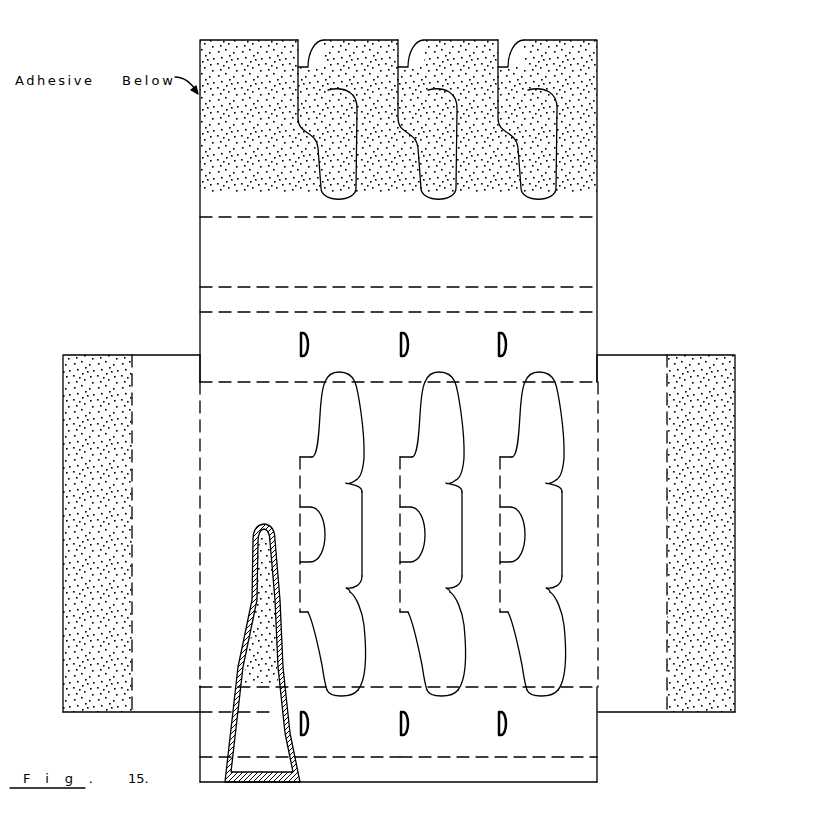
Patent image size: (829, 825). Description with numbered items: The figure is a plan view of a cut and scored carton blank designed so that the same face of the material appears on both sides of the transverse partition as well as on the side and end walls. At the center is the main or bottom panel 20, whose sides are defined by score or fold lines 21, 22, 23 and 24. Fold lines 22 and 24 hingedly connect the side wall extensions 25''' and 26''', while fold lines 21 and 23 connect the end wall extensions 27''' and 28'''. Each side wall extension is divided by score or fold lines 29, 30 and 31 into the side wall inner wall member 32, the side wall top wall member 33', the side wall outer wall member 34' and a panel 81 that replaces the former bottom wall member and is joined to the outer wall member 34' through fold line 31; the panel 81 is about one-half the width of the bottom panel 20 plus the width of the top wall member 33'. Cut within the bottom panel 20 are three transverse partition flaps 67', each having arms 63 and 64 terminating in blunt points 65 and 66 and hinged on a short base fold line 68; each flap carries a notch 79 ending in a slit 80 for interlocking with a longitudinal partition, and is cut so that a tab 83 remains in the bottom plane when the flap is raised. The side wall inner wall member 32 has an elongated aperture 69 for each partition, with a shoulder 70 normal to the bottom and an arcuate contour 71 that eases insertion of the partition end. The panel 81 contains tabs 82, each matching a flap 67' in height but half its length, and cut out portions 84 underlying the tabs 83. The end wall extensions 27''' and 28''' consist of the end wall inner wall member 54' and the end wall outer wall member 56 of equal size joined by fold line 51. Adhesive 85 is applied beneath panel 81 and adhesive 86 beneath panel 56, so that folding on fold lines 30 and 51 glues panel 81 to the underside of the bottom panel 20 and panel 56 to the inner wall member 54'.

The main or bottom panel 20 is at (498, 430).
The score or fold line 21 is at (200, 510).
The score or fold line 22 is at (269, 382).
The score or fold line 23 is at (598, 453).
The score or fold line 24 is at (462, 688).
The side wall extension 25''' is at (427, 116).
The side wall extension 26''' is at (435, 769).
The end wall extension 27''' is at (131, 510).
The end wall extension 28''' is at (669, 507).
The score or fold line 29 is at (440, 314).
The score or fold line 30 is at (460, 288).
The score or fold line 31 is at (441, 218).
The side wall inner wall member 32 is at (353, 323).
The side wall top wall member 33' is at (512, 525).
The side wall outer wall member 34' is at (413, 498).
The score or fold line 51 is at (132, 457).
The end wall inner wall member 54' is at (401, 386).
The end wall outer wall member 56 is at (97, 703).
The arm 63 is at (350, 415).
The arm 64 is at (350, 648).
The reduced end or blunt point 65 is at (340, 375).
The reduced end or blunt point 66 is at (340, 692).
The transverse partition flap 67' is at (400, 534).
The score or fold line 68 is at (301, 466).
The elongated aperture 69 is at (305, 333).
The back face or shoulder 70 is at (301, 347).
The arcuate contour 71 is at (309, 345).
The notch 79 is at (347, 482).
The slit or cut 80 is at (338, 479).
The panel 81 is at (590, 82).
The tab or flap 82 is at (547, 50).
The tab 83 is at (318, 518).
The cut out portion 84 is at (507, 50).
The adhesive 85 is at (592, 177).
The adhesive 86 is at (81, 690).